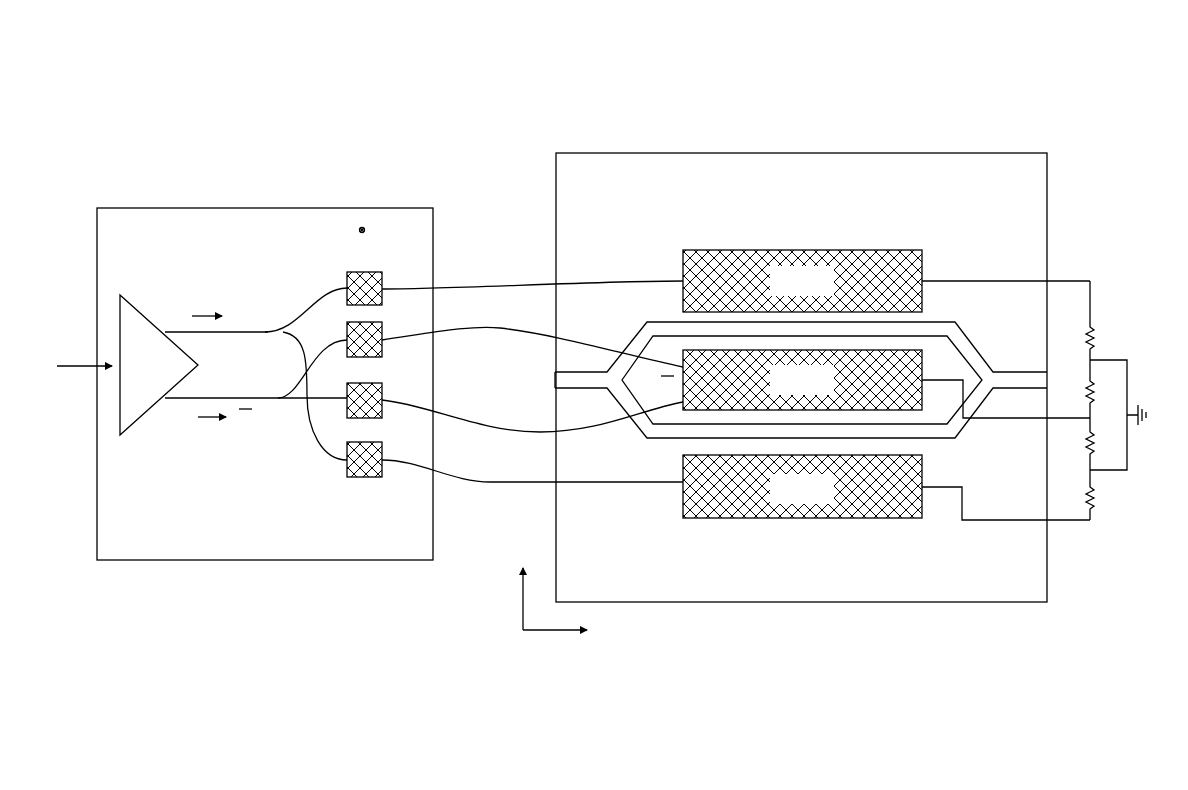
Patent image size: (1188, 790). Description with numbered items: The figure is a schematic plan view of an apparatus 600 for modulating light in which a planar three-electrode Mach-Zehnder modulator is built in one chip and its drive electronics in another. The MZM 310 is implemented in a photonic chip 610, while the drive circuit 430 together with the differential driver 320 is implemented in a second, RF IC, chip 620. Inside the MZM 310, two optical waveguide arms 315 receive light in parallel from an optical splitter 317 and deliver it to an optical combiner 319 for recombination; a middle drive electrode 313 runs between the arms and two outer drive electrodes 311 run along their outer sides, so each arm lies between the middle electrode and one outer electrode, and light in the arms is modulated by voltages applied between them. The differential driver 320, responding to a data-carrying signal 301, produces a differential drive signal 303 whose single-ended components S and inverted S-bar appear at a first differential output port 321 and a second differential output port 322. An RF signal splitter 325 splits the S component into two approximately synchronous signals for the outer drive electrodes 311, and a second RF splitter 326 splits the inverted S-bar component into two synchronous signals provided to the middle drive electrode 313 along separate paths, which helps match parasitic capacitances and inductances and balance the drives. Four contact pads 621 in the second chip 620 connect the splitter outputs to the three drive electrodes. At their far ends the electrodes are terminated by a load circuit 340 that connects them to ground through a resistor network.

The apparatus 600 is at (601, 372).
The photonic chip 610 is at (850, 377).
The second chip 620 is at (370, 350).
The drive circuit 430 is at (192, 178).
The data-carrying signal 301 is at (72, 365).
The differential driver 320 is at (159, 365).
The first differential output port 321 is at (178, 330).
The second differential output port 322 is at (175, 405).
The differential drive signal 303 is at (200, 314).
The RF signal splitter 325 is at (265, 308).
The second RF splitter 326 is at (283, 412).
The contact pads 621 is at (362, 272).
The planar optical waveguide MZM 310 is at (858, 216).
The outer drive electrodes 311 is at (877, 385).
The middle drive electrode 313 is at (875, 384).
The optical waveguide arms 315 is at (658, 320).
The optical splitter 317 is at (602, 355).
The optical combiner 319 is at (996, 356).
The load circuit 340 is at (1072, 236).